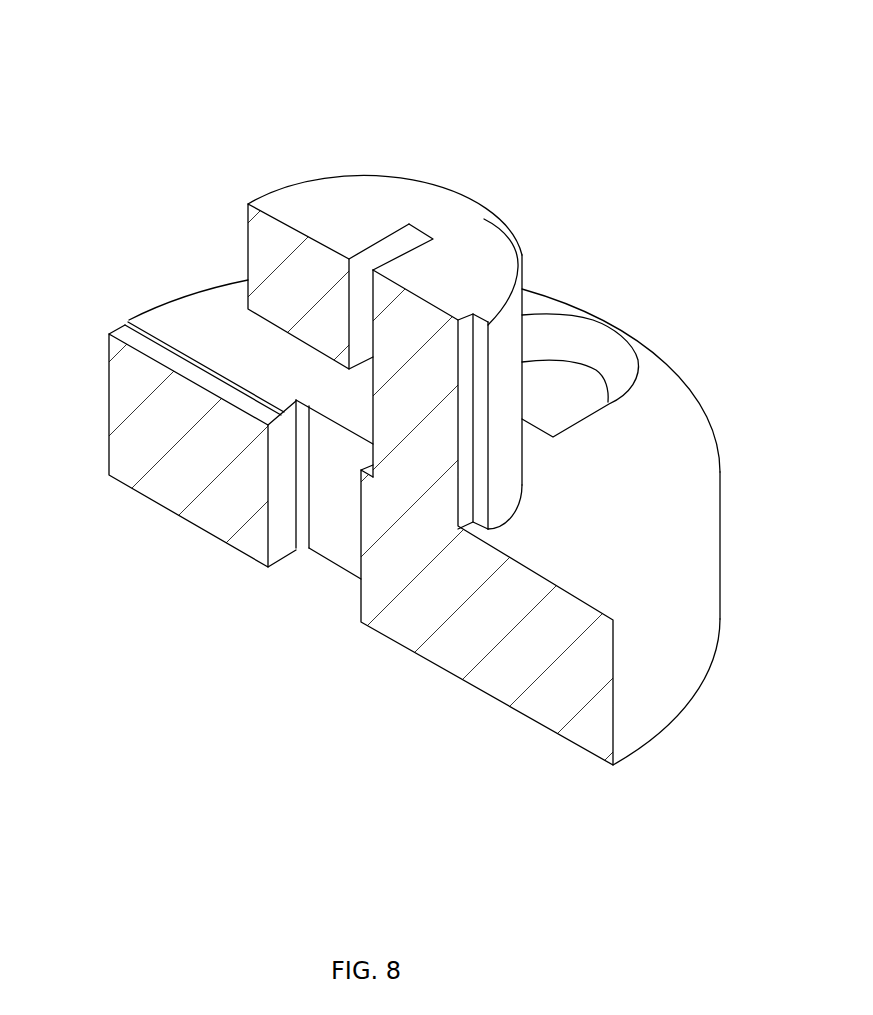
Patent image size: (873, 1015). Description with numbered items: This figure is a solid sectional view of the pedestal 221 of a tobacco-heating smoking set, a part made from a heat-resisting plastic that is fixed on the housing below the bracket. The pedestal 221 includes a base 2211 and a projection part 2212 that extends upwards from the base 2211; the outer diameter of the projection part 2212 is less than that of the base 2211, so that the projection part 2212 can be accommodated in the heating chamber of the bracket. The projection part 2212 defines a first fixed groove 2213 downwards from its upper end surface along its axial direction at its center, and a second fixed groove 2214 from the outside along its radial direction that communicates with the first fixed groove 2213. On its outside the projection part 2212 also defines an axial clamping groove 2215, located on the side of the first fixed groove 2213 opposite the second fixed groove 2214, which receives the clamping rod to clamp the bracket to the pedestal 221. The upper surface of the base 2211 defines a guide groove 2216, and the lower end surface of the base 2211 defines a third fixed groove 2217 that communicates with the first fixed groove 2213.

The pedestal 221 is at (166, 32).
The base 2211 is at (188, 305).
The projection part 2212 is at (288, 238).
The first fixed groove 2213 is at (397, 240).
The second fixed groove 2214 is at (260, 350).
The clamping groove 2215 is at (480, 337).
The guide groove 2216 is at (120, 320).
The third fixed groove 2217 is at (340, 503).